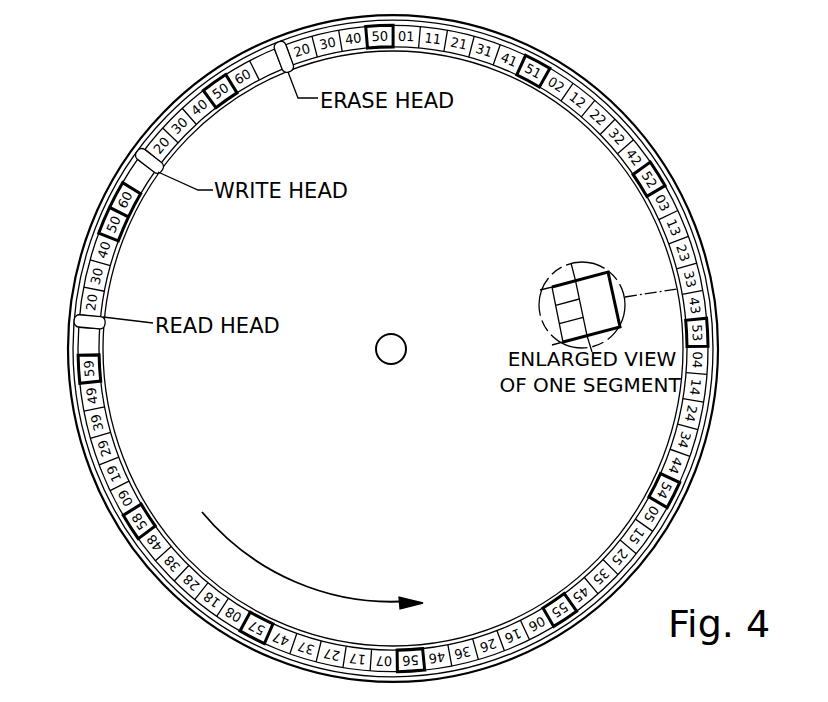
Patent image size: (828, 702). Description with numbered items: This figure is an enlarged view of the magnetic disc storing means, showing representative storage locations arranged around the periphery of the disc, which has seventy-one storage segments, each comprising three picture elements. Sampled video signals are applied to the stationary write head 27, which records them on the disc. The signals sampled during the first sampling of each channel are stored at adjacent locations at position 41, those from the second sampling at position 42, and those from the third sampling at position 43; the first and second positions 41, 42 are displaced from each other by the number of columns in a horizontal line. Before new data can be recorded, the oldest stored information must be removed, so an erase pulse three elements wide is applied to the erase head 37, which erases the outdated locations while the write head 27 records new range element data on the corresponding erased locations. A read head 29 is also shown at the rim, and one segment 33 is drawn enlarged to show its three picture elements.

The erase head 37 is at (279, 42).
The position 43 is at (255, 61).
The write head 27 is at (143, 148).
The position 42 is at (125, 175).
The read head 29 is at (73, 311).
The position 41 is at (77, 332).
The segment (enlarged view) 33 is at (608, 307).